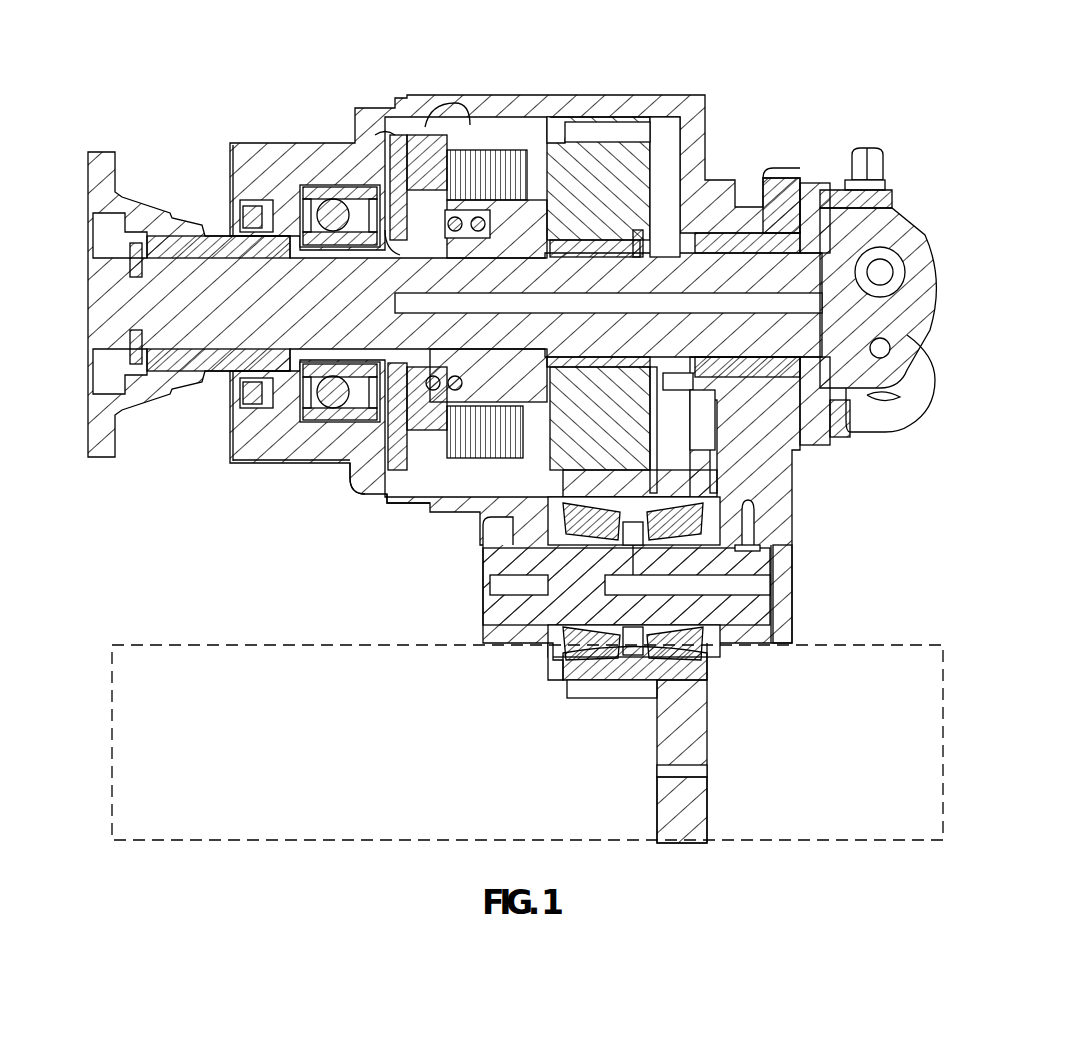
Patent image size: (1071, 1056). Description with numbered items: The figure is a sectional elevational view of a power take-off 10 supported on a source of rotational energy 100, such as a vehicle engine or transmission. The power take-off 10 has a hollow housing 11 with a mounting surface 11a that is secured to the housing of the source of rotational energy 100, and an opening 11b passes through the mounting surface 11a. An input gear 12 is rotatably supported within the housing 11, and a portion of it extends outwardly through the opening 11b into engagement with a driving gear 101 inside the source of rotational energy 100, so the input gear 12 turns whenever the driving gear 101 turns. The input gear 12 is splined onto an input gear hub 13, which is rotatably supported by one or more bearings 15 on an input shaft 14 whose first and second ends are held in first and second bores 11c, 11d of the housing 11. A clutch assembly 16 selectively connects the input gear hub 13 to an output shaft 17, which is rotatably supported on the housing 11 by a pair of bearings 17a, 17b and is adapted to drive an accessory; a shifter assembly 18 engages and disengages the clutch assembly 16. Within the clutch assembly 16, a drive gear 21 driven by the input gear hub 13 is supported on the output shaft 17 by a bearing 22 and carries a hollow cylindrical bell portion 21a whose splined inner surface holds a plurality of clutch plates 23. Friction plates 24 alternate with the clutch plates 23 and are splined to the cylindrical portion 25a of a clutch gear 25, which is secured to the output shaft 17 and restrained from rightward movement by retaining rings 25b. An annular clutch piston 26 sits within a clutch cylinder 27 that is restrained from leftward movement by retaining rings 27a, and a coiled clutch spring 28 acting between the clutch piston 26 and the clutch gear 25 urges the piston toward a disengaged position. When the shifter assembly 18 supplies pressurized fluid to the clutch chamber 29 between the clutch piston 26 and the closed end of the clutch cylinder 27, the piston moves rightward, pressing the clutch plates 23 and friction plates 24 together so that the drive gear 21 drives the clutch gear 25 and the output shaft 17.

The power take-off 10 is at (858, 80).
The housing 11 is at (685, 122).
The mounting surface 11a is at (770, 648).
The opening 11b is at (552, 645).
The first bore 11c is at (484, 565).
The second bore 11d is at (750, 568).
The input gear 12 is at (690, 737).
The input gear hub 13 is at (640, 672).
The input shaft 14 is at (757, 613).
The bearings 15 is at (703, 662).
The clutch assembly 16 is at (562, 140).
The output shaft 17 is at (100, 300).
The bearing 17a is at (330, 192).
The bearing 17b is at (712, 230).
The shifter assembly 18 is at (888, 140).
The drive gear 21 is at (572, 158).
The hollow cylindrical bell portion 21a is at (460, 148).
The bearing 22 is at (578, 296).
The clutch plates 23 is at (478, 148).
The friction plates 24 is at (433, 145).
The clutch gear 25 is at (523, 385).
The cylindrical portion 25a is at (463, 398).
The retaining rings 25b is at (563, 238).
The clutch piston 26 is at (362, 500).
The clutch cylinder 27 is at (400, 140).
The retaining rings 27a is at (385, 225).
The clutch spring 28 is at (447, 238).
The clutch chamber 29 is at (352, 478).
The source of rotational energy 100 is at (183, 645).
The driving gear 101 is at (703, 820).